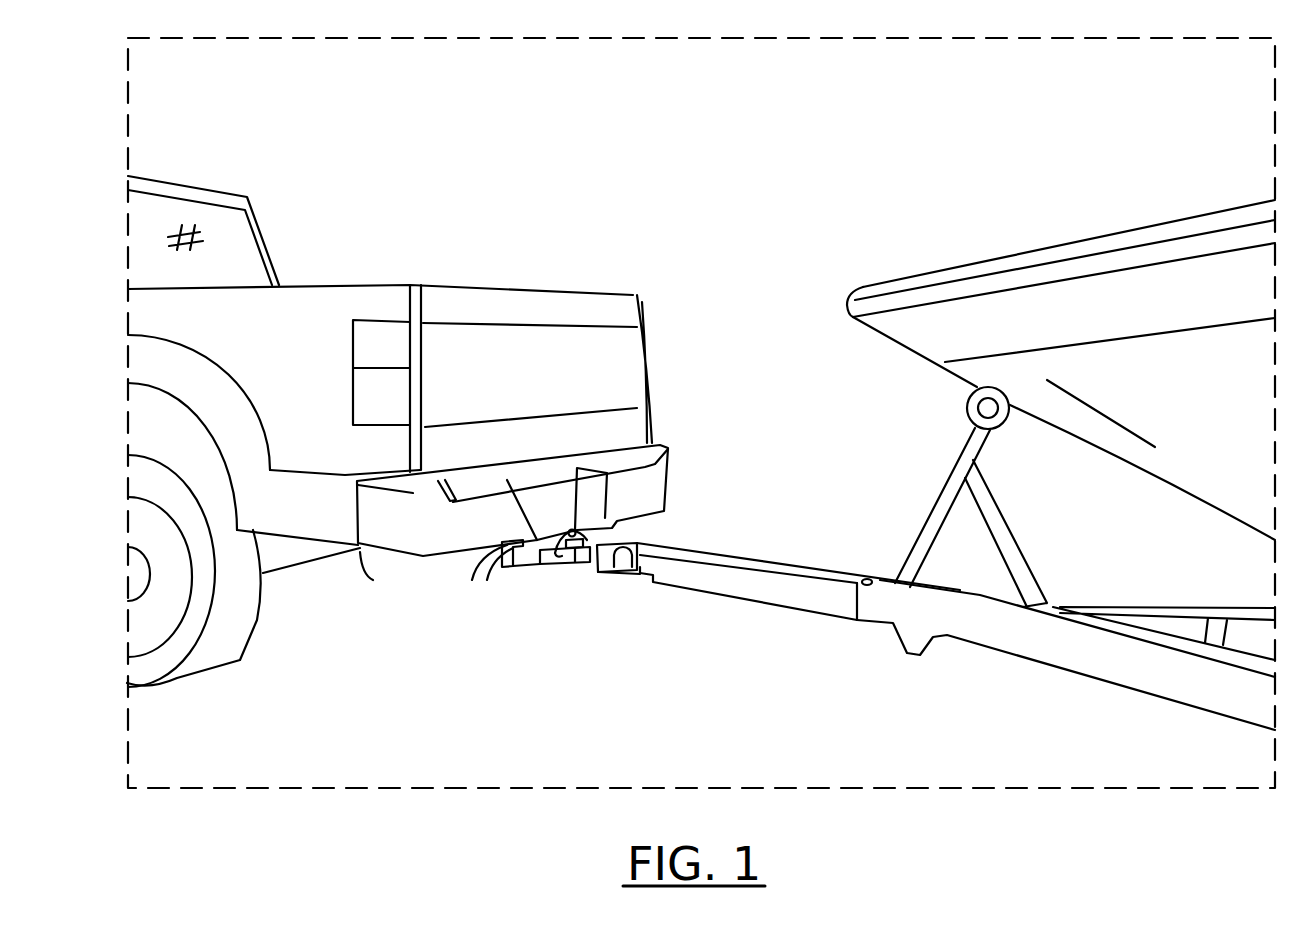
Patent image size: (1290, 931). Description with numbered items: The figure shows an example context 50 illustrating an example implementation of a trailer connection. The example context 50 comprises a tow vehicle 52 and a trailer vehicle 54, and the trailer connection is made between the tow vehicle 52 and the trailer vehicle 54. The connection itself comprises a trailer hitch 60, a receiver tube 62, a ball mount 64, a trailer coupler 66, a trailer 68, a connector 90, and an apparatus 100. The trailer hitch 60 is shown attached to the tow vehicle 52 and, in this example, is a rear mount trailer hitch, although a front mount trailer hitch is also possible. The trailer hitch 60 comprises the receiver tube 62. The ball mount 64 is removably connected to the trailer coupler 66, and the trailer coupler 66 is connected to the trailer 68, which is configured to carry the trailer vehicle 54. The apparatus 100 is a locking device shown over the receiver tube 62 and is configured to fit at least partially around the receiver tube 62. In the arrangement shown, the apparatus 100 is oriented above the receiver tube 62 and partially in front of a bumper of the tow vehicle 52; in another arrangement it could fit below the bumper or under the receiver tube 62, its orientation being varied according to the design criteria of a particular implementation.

The example context 50 is at (348, 37).
The tow vehicle 52 is at (368, 283).
The trailer vehicle 54 is at (1035, 248).
The trailer hitch 60 is at (502, 570).
The receiver tube 62 is at (550, 565).
The ball mount 64 is at (622, 577).
The trailer coupler 66 is at (753, 562).
The trailer 68 is at (1027, 645).
The connector 90 is at (588, 562).
The apparatus 100 is at (570, 527).